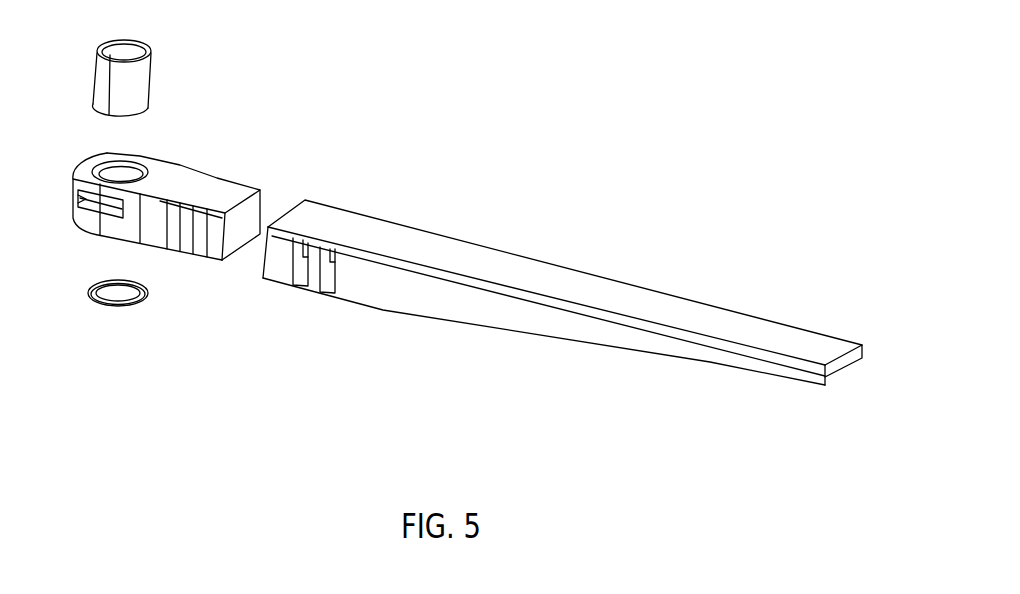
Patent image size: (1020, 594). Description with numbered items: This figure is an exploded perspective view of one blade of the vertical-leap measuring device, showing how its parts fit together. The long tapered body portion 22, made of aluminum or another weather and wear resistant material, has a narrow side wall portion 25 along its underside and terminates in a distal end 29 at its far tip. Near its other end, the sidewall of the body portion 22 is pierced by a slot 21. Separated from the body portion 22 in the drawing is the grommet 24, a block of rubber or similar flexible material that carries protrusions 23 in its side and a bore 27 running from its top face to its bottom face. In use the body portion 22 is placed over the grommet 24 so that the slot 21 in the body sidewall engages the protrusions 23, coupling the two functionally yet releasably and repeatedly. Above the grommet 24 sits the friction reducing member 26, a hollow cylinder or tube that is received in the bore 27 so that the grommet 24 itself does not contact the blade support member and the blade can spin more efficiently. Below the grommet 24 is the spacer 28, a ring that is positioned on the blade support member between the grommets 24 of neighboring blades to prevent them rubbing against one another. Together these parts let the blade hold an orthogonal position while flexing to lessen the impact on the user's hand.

The slot 21 is at (330, 298).
The body portion 22 is at (532, 270).
The protrusions 23 is at (199, 242).
The grommet 24 is at (218, 178).
The narrow side wall portion 25 is at (782, 368).
The friction reducing member 26 is at (138, 87).
The bore 27 is at (103, 160).
The spacer 28 is at (137, 307).
The distal end 29 is at (843, 360).